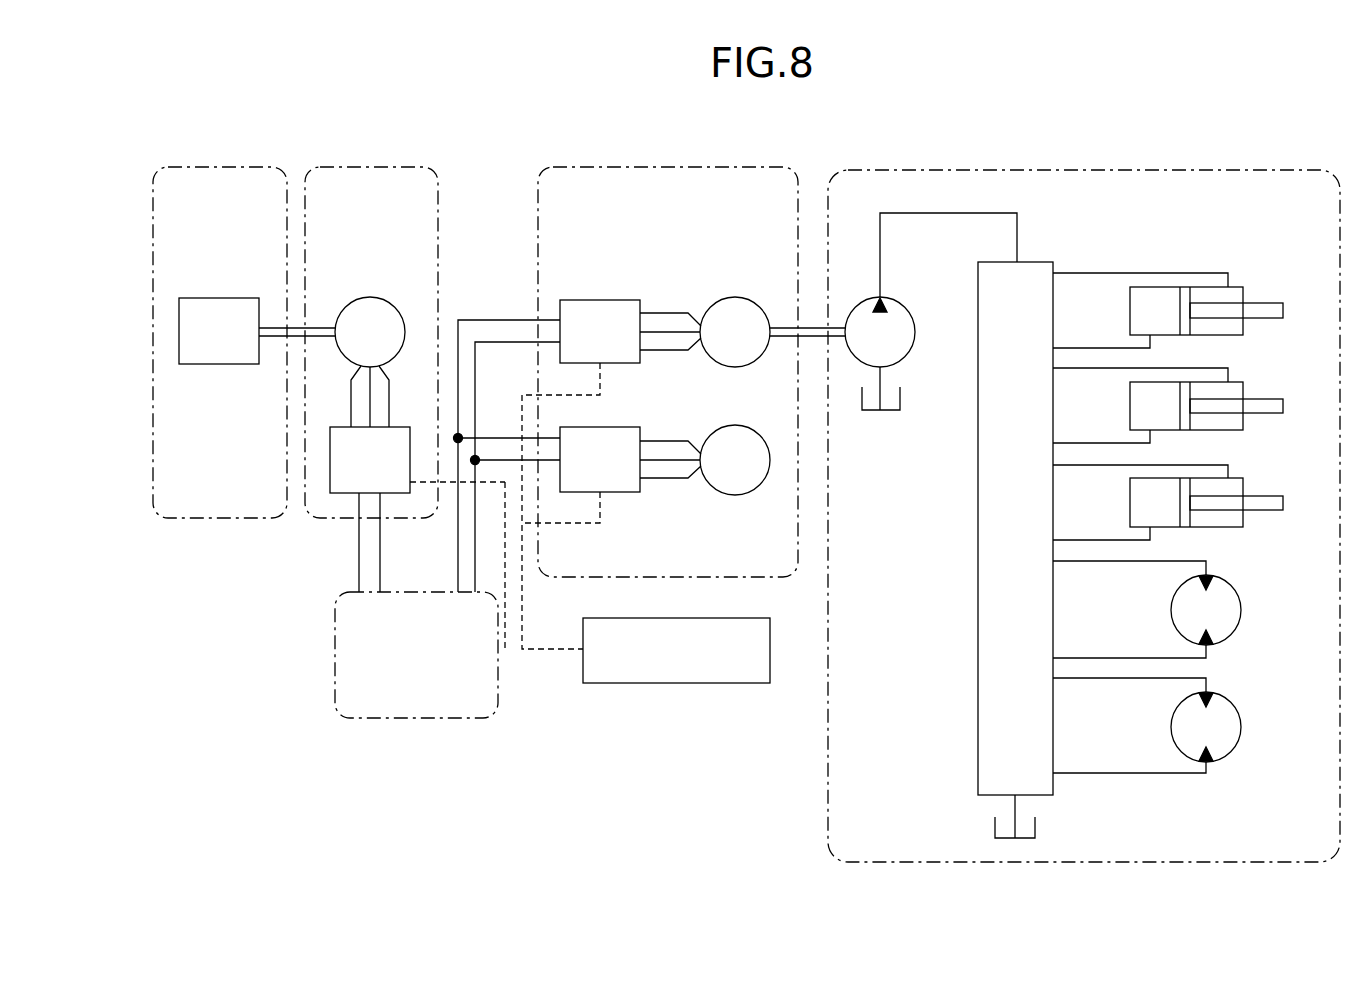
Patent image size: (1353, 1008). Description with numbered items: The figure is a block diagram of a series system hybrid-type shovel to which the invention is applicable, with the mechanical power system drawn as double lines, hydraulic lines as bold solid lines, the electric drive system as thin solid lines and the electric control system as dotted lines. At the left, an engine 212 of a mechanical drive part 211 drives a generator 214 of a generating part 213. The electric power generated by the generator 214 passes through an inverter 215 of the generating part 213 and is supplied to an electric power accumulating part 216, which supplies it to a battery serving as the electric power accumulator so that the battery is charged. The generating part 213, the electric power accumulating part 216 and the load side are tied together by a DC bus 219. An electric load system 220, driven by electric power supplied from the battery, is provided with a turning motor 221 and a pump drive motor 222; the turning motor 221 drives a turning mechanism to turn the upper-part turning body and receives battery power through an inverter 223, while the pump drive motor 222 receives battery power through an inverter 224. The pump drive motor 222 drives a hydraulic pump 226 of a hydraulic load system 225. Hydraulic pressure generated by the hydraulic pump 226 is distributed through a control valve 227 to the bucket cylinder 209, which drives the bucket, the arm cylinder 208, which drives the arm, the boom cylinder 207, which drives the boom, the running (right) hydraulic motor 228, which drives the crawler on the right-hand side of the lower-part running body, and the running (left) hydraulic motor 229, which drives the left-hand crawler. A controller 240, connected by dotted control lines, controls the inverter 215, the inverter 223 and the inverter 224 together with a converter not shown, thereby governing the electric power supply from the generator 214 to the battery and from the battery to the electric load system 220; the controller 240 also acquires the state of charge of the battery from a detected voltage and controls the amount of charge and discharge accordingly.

The boom cylinder 207 is at (1240, 478).
The arm cylinder 208 is at (1240, 382).
The bucket cylinder 209 is at (1240, 287).
The mechanical drive part 211 is at (215, 165).
The engine 212 is at (220, 298).
The generating part 213 is at (385, 165).
The generator 214 is at (370, 297).
The inverter 215 is at (406, 427).
The electric power accumulating part 216 is at (447, 718).
The DC bus 219 is at (477, 577).
The electric load system 220 is at (712, 167).
The turning motor 221 is at (735, 495).
The pump drive motor 222 is at (735, 297).
The inverter 223 is at (621, 492).
The inverter 224 is at (600, 300).
The hydraulic load system 225 is at (1250, 170).
The hydraulic pump 226 is at (909, 313).
The control valve 227 is at (978, 558).
The running (right) hydraulic motor 228 is at (1233, 590).
The running (left) hydraulic motor 229 is at (1233, 705).
The controller 240 is at (718, 618).